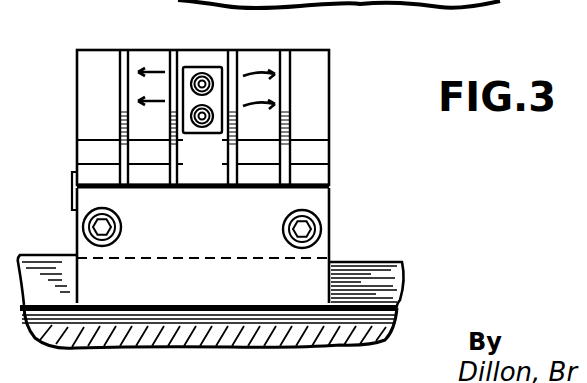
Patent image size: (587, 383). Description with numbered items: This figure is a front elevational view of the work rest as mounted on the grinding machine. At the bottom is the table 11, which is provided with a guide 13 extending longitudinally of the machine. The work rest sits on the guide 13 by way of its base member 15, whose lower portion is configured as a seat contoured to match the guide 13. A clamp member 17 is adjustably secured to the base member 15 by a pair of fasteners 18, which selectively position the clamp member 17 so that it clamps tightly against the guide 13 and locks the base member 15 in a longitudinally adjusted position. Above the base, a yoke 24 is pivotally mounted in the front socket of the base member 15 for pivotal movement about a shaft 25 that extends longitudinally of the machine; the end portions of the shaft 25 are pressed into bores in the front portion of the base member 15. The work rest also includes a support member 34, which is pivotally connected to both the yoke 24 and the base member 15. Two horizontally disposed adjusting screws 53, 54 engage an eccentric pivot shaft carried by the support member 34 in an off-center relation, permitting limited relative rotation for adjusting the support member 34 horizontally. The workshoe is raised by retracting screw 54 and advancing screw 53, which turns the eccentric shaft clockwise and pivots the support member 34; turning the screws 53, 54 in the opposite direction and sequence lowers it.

The table 11 is at (276, 335).
The guide 13 is at (401, 268).
The base member 15 is at (200, 109).
The clamp member 17 is at (330, 248).
The fasteners 18 is at (83, 227).
The yoke 24 is at (134, 50).
The shaft 25 is at (330, 186).
The support member 34 is at (222, 57).
The adjusting screw 53 is at (198, 68).
The adjusting screw 54 is at (204, 126).